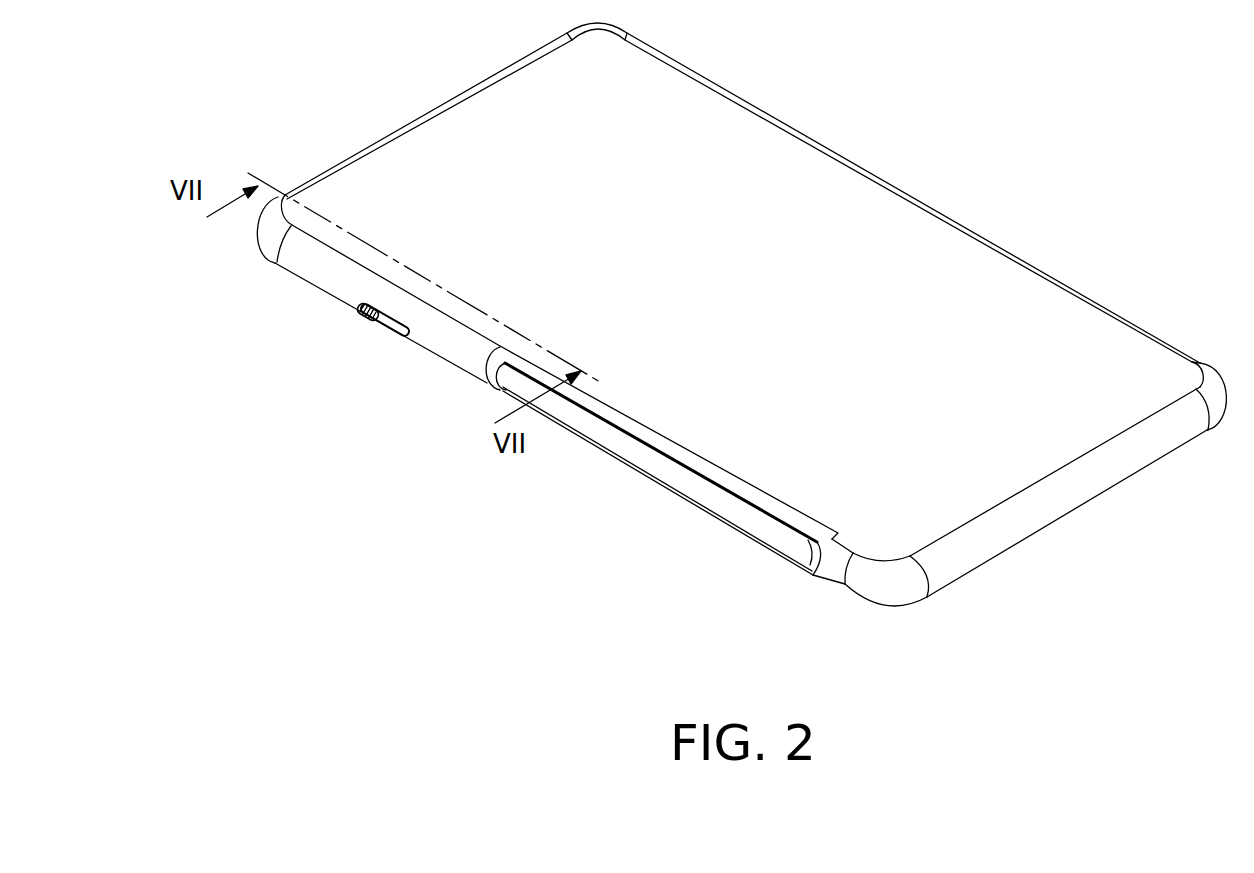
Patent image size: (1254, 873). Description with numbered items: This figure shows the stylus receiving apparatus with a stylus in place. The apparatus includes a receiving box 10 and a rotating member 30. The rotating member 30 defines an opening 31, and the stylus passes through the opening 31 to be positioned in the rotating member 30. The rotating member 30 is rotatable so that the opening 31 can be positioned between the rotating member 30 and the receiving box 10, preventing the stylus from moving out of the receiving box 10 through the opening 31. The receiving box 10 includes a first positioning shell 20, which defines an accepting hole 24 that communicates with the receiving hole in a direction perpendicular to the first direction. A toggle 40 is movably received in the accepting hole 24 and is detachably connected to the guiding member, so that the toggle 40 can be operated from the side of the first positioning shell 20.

The receiving box 10 is at (1013, 295).
The first positioning shell 20 is at (773, 523).
The accepting hole 24 is at (403, 333).
The rotating member 30 is at (740, 484).
The opening 31 is at (640, 467).
The toggle 40 is at (370, 320).